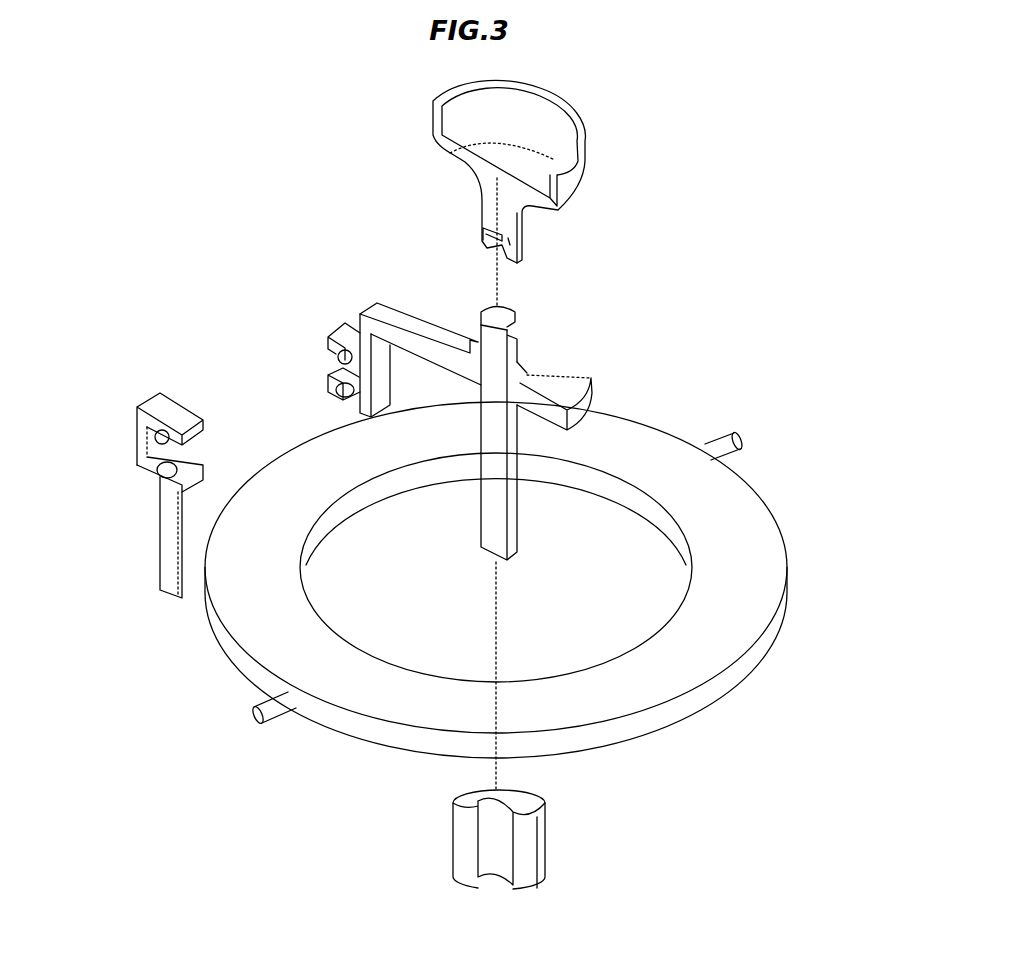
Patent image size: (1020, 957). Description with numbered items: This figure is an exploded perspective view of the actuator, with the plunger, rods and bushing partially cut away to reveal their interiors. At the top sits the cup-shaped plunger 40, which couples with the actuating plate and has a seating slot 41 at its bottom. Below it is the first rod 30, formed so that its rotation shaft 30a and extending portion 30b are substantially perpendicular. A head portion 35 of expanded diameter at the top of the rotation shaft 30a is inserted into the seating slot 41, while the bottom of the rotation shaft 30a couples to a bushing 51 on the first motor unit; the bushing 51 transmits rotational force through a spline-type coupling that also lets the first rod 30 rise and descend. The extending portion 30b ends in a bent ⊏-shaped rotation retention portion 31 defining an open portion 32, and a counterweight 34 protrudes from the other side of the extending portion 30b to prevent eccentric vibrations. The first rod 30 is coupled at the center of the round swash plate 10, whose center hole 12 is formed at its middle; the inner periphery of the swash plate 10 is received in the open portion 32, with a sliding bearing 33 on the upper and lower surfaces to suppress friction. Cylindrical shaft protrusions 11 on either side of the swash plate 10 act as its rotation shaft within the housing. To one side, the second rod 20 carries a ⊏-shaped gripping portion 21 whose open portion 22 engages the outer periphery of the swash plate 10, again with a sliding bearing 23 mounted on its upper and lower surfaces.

The swash plate 10 is at (702, 670).
The shaft protrusion 11 is at (737, 442).
The center hole 12 is at (658, 571).
The second rod 20 is at (168, 530).
The gripping portion 21 is at (143, 428).
The open portion 22 is at (188, 445).
The sliding bearing 23 is at (162, 474).
The first rod 30 is at (513, 396).
The rotation shaft 30a is at (490, 492).
The extending portion 30b is at (407, 320).
The rotation retention portion 31 is at (358, 352).
The open portion 32 is at (332, 366).
The sliding bearing 33 is at (330, 380).
The counterweight 34 is at (578, 392).
The head portion 35 is at (519, 318).
The plunger 40 is at (577, 127).
The seating slot 41 is at (486, 254).
The bushing 51 is at (462, 843).